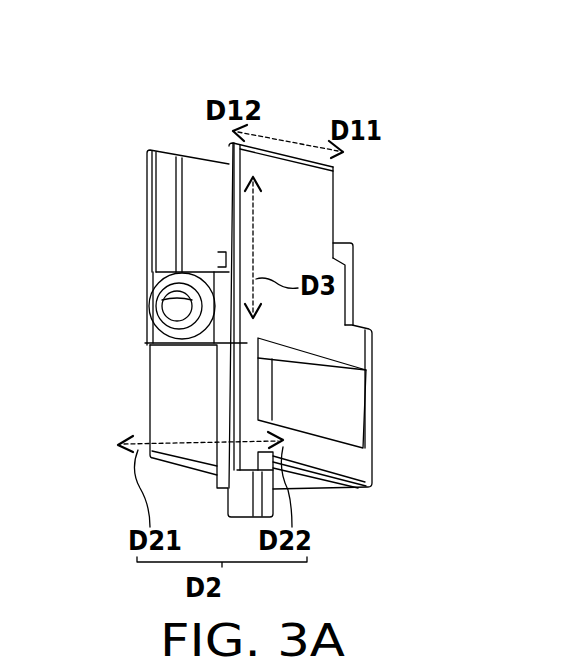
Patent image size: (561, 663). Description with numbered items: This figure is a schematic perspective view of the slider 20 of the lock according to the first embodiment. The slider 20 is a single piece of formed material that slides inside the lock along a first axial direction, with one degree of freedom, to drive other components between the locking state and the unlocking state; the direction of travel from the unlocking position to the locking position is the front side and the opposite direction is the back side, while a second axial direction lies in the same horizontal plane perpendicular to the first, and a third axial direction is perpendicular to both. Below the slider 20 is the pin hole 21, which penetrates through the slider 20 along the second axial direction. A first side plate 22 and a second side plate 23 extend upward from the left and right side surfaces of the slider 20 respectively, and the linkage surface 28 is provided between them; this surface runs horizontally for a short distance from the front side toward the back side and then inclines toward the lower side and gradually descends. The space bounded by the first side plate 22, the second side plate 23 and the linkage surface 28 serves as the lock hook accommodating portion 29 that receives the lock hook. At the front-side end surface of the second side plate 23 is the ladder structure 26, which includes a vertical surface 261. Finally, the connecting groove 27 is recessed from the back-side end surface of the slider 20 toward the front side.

The slider 20 is at (118, 94).
The pin hole 21 is at (355, 413).
The first side plate 22 is at (168, 145).
The second side plate 23 is at (278, 140).
The ladder structure 26 is at (356, 268).
The vertical surface 261 is at (335, 170).
The connecting groove 27 is at (150, 300).
The linkage surface 28 is at (347, 242).
The lock hook accommodating portion 29 is at (195, 222).